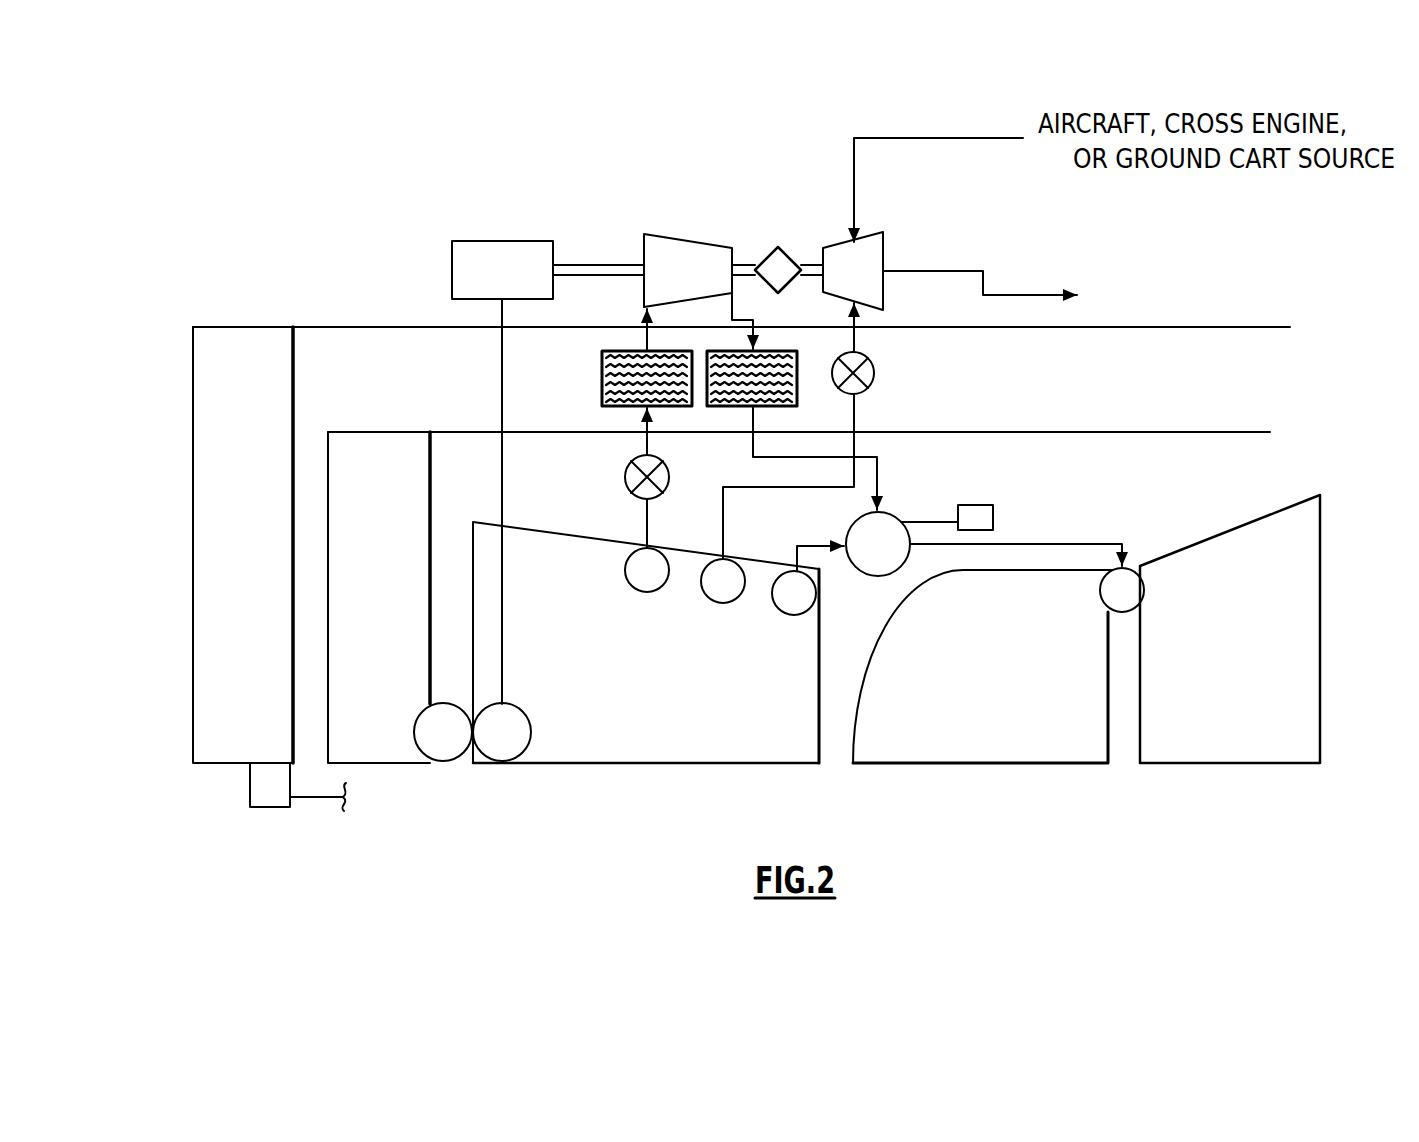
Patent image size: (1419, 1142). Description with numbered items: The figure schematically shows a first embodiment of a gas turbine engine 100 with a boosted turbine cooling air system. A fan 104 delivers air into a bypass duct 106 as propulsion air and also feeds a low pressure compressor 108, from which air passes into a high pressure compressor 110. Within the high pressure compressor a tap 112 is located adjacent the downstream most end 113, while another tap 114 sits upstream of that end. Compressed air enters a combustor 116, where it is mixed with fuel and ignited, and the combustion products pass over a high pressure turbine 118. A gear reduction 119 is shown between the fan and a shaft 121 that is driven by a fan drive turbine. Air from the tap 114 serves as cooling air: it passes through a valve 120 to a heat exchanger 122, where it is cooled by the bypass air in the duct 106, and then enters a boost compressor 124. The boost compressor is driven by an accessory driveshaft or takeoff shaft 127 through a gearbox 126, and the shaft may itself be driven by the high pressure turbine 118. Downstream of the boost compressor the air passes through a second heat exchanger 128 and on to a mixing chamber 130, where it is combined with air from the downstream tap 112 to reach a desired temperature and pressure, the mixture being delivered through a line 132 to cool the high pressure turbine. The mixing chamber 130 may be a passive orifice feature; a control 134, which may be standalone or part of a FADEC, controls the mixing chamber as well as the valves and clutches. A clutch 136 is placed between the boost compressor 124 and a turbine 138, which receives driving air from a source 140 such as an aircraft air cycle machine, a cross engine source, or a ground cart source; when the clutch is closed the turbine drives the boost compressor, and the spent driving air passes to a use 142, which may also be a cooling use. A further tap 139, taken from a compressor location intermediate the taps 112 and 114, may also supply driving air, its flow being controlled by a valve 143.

The gas turbine engine 100 is at (146, 284).
The fan 104 is at (237, 352).
The bypass duct 106 is at (403, 406).
The low pressure compressor 108 is at (430, 491).
The high pressure compressor 110 is at (530, 548).
The tap 112 is at (797, 569).
The downstream most end 113 is at (822, 646).
The tap 114 is at (650, 548).
The combustor 116 is at (1001, 646).
The high pressure turbine 118 is at (1200, 578).
The gear reduction 119 is at (265, 810).
The valve 120 is at (625, 473).
The shaft 121 is at (315, 800).
The heat exchanger 122 is at (602, 375).
The boost compressor 124 is at (655, 243).
The gearbox 126 is at (472, 242).
The takeoff shaft 127 is at (502, 368).
The heat exchanger 128 is at (797, 395).
The mixing chamber 130 is at (888, 518).
The line 132 is at (1128, 556).
The control 134 is at (993, 517).
The clutch 136 is at (766, 249).
The turbine 138 is at (883, 244).
The tap 139 is at (758, 487).
The source 140 is at (854, 138).
The use 142 is at (983, 283).
The valve 143 is at (875, 373).